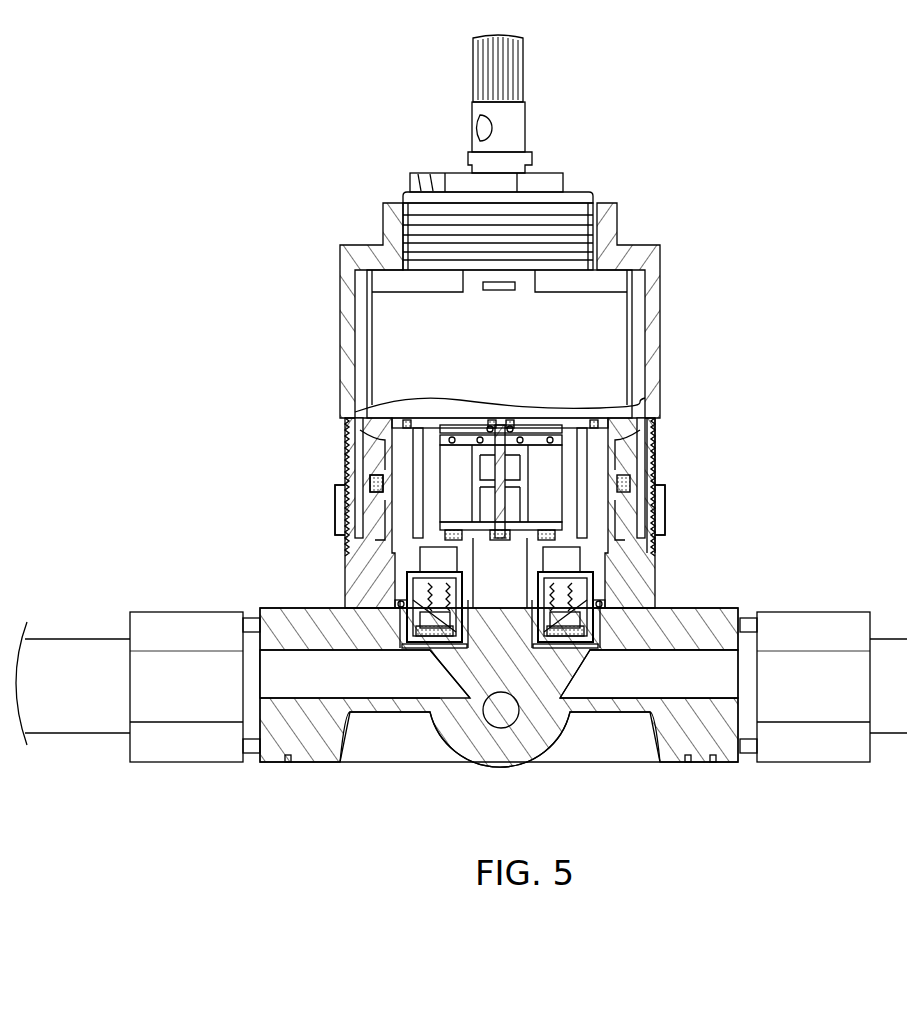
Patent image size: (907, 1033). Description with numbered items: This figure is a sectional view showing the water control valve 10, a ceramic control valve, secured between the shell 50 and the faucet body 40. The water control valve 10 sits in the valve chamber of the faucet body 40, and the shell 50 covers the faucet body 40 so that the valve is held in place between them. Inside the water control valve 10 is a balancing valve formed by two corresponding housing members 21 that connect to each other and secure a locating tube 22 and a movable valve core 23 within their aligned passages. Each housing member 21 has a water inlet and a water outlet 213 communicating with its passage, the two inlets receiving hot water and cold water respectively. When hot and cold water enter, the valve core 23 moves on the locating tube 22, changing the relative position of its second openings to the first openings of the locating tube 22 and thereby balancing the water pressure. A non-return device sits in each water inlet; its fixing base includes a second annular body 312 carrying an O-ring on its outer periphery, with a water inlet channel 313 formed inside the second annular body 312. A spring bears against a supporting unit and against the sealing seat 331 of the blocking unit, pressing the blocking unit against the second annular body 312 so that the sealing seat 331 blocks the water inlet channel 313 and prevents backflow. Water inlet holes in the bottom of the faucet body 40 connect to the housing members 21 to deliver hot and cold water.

The water control valve 10 is at (580, 171).
The shell 50 is at (328, 308).
The water outlet 213 is at (426, 430).
The locating tube 22 is at (615, 456).
The valve core 23 is at (374, 490).
The housing member 21 is at (350, 537).
The sealing seat 331 is at (618, 604).
The second annular body 312 is at (408, 630).
The water inlet channel 313 is at (580, 642).
The faucet body 40 is at (258, 772).